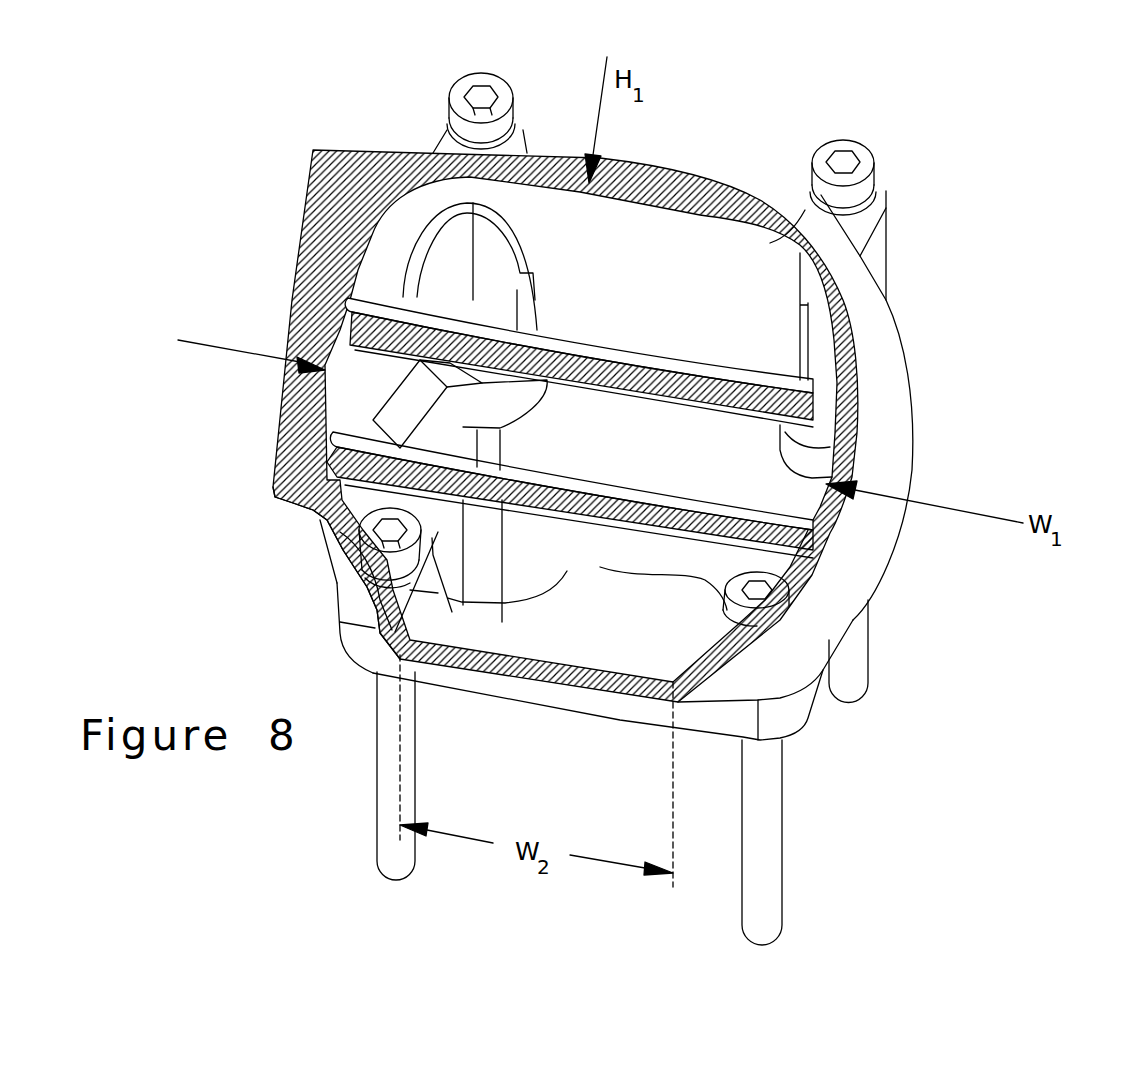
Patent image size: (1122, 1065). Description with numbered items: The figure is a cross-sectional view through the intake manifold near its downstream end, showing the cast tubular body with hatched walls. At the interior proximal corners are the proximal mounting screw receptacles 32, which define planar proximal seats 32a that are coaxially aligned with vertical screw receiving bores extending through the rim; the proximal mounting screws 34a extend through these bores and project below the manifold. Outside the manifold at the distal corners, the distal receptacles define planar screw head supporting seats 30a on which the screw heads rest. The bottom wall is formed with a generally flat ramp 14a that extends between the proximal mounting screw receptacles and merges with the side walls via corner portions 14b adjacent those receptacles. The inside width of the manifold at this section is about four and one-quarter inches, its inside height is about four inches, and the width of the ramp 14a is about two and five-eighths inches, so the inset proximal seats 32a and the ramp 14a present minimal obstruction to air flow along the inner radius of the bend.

The ramp 14a is at (517, 658).
The corner portions 14b is at (320, 532).
The planar screw head supporting seats 30a is at (446, 122).
The proximal mounting screw receptacles 32 is at (618, 587).
The proximal seats 32a is at (432, 538).
The proximal mounting screws 34a is at (418, 787).